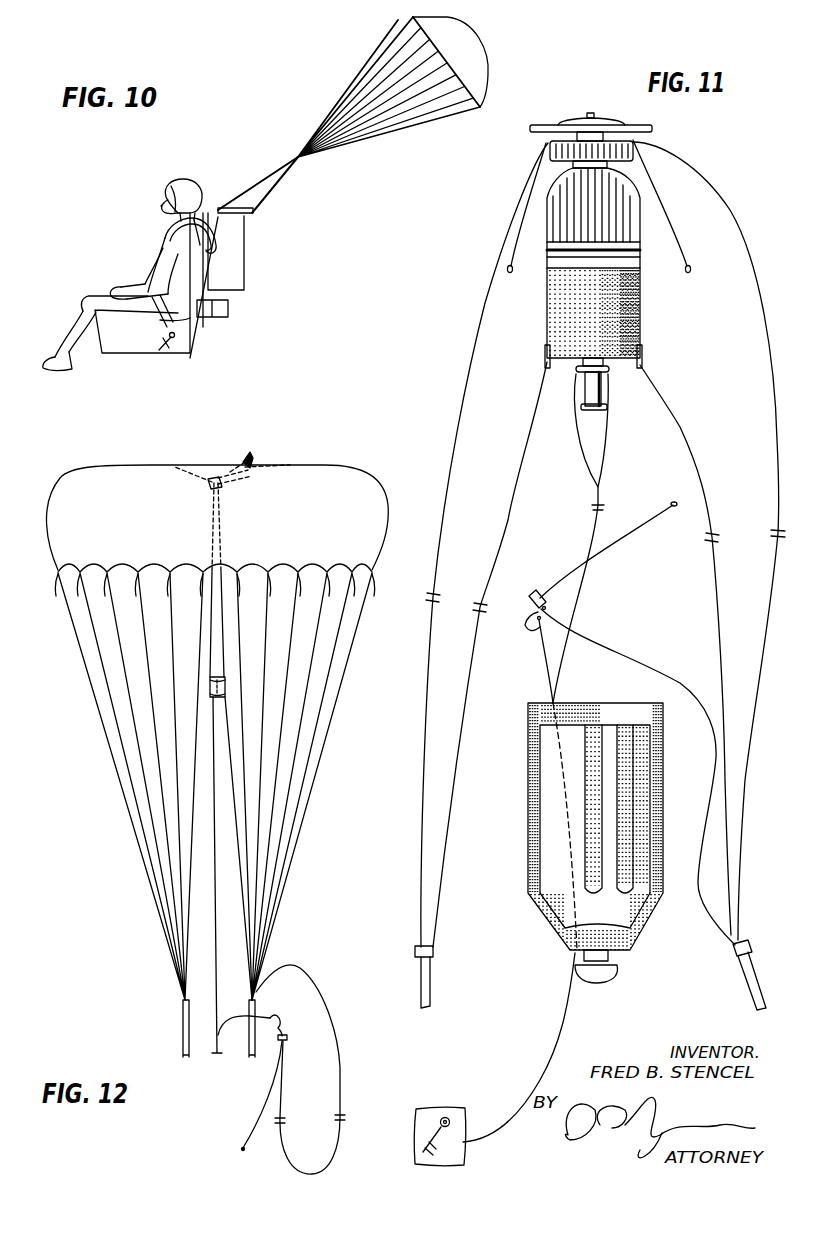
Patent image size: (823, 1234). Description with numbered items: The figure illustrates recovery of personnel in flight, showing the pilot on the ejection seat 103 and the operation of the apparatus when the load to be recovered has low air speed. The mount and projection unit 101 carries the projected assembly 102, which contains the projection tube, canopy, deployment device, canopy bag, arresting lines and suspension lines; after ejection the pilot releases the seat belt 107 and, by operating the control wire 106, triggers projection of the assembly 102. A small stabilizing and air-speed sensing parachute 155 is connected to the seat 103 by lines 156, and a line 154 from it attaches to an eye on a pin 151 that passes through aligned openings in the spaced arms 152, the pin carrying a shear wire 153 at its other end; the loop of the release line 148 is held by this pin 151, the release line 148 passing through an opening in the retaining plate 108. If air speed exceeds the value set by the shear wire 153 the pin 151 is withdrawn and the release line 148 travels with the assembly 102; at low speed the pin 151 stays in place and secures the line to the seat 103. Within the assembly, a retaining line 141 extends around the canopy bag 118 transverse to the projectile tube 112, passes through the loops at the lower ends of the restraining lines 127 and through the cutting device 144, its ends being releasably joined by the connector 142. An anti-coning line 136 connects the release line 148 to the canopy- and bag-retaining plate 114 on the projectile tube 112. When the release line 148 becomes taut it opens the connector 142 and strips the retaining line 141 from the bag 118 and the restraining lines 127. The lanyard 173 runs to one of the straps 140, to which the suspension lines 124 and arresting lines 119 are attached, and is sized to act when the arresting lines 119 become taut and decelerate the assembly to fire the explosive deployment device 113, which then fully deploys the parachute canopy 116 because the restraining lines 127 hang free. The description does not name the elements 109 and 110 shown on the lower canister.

In FIG. 10, the mount and projection unit 101 is at (228, 323).
In FIG. 10, the projected assembly 102 is at (243, 273).
In FIG. 10, the ejection seat 103 is at (130, 357).
In FIG. 10, the control wire 106 is at (205, 325).
In FIG. 10, the seat belt 107 is at (160, 303).
In FIG. 11, the retaining plate 108 is at (576, 955).
In FIG. 11, the deployment canister 109 is at (563, 913).
In FIG. 11, the canister liner 110 is at (563, 925).
In FIG. 11, the projectile tube 112 is at (606, 400).
In FIG. 12, the projectile tube 112 is at (233, 472).
In FIG. 11, the deployment device 113 is at (558, 137).
In FIG. 12, the deployment device 113 is at (243, 455).
In FIG. 12, the canopy- and bag-retaining plate 114 is at (210, 484).
In FIG. 12, the parachute canopy 116 is at (312, 514).
In FIG. 11, the canopy bag 118 is at (640, 298).
In FIG. 12, the canopy bag 118 is at (228, 680).
In FIG. 11, the arresting lines 119 is at (450, 766).
In FIG. 12, the arresting lines 119 is at (248, 947).
In FIG. 11, the suspension lines 124 is at (705, 177).
In FIG. 12, the suspension lines 124 is at (270, 890).
In FIG. 11, the restraining lines 127 is at (518, 228).
In FIG. 12, the restraining lines 127 is at (103, 598).
In FIG. 11, the anti-coning line 136 is at (594, 507).
In FIG. 12, the anti-coning line 136 is at (228, 987).
In FIG. 11, the straps 140 is at (430, 993).
In FIG. 12, the straps 140 is at (247, 1053).
In FIG. 11, the retaining line 141 is at (630, 535).
In FIG. 12, the retaining line 141 is at (265, 1100).
In FIG. 11, the connector 142 is at (523, 627).
In FIG. 12, the connector 142 is at (278, 1016).
In FIG. 11, the cutting device 144 is at (534, 594).
In FIG. 12, the cutting device 144 is at (288, 1036).
In FIG. 10, the release line 148 is at (198, 350).
In FIG. 11, the release line 148 is at (543, 663).
In FIG. 10, the pin 151 is at (158, 357).
In FIG. 11, the pin 151 is at (414, 1153).
In FIG. 10, the spaced arms 152 is at (166, 338).
In FIG. 11, the spaced arms 152 is at (438, 1135).
In FIG. 10, the shear wire 153 is at (165, 347).
In FIG. 11, the shear wire 153 is at (458, 1153).
In FIG. 10, the line 154 is at (266, 198).
In FIG. 10, the stabilizing and air-speed sensing parachute 155 is at (476, 48).
In FIG. 10, the lines 156 is at (258, 184).
In FIG. 11, the lanyard 173 is at (623, 647).
In FIG. 12, the lanyard 173 is at (339, 1084).